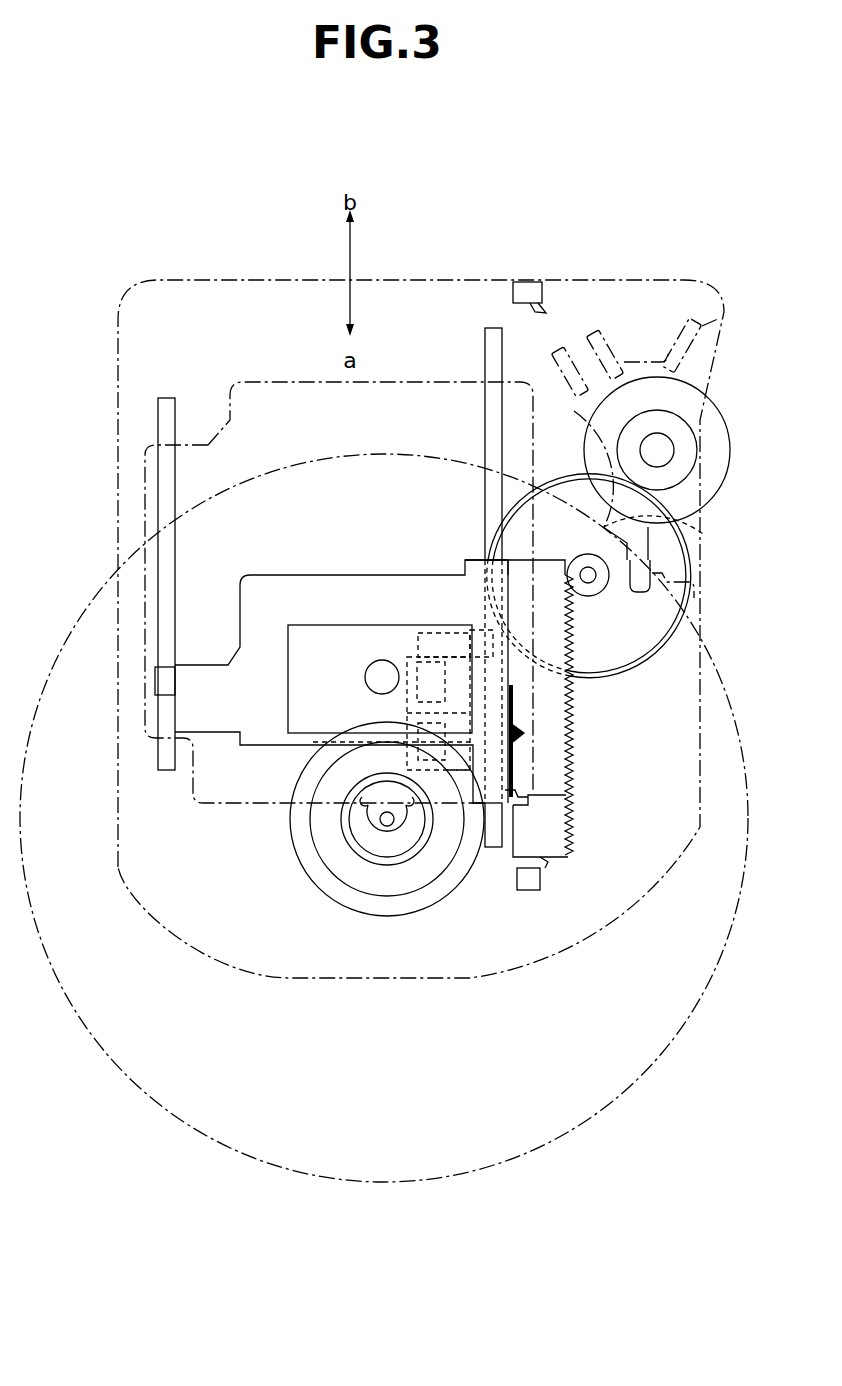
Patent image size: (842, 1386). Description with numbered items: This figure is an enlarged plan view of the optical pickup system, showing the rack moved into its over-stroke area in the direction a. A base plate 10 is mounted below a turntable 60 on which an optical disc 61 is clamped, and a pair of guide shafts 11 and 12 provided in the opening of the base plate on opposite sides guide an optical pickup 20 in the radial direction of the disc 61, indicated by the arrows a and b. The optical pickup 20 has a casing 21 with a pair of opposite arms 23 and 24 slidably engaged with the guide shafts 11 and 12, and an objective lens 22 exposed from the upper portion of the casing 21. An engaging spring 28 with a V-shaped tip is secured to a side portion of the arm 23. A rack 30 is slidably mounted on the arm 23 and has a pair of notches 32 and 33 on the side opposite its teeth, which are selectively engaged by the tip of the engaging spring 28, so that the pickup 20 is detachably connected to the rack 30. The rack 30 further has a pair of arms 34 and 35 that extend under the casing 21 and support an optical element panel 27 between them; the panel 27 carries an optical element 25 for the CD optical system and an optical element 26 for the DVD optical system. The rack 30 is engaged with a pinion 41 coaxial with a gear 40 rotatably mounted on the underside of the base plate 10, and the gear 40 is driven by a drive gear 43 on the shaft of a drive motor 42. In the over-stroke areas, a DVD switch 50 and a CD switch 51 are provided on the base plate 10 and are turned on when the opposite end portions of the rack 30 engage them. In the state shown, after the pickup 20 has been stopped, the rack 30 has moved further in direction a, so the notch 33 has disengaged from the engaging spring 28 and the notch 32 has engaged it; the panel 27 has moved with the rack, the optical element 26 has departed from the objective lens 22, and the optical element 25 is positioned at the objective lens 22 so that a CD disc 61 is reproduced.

The base plate 10 is at (420, 292).
The guide shaft 11 is at (486, 433).
The guide shaft 12 is at (165, 497).
The optical pickup 20 is at (278, 560).
The casing 21 is at (326, 590).
The objective lens 22 is at (382, 672).
The arm 23 is at (478, 560).
The arm 24 is at (155, 680).
The optical element 25 is at (431, 677).
The optical element 26 is at (432, 752).
The optical element panel 27 is at (410, 713).
The engaging spring 28 is at (522, 737).
The rack 30 is at (548, 828).
The notch 32 is at (520, 728).
The notch 33 is at (525, 793).
The arm 34 is at (428, 657).
The arm 35 is at (460, 783).
The gear 40 is at (670, 618).
The pinion 41 is at (606, 572).
The drive motor 42 is at (712, 447).
The drive gear 43 is at (680, 425).
The DVD switch 50 is at (530, 297).
The CD switch 51 is at (530, 882).
The turntable 60 is at (386, 905).
The optical disc 61 is at (612, 1082).